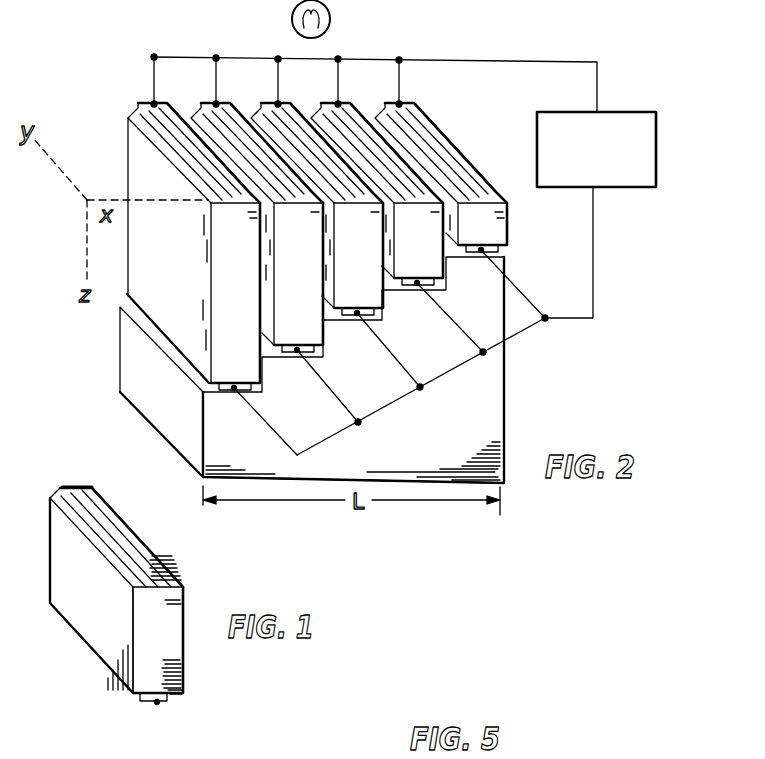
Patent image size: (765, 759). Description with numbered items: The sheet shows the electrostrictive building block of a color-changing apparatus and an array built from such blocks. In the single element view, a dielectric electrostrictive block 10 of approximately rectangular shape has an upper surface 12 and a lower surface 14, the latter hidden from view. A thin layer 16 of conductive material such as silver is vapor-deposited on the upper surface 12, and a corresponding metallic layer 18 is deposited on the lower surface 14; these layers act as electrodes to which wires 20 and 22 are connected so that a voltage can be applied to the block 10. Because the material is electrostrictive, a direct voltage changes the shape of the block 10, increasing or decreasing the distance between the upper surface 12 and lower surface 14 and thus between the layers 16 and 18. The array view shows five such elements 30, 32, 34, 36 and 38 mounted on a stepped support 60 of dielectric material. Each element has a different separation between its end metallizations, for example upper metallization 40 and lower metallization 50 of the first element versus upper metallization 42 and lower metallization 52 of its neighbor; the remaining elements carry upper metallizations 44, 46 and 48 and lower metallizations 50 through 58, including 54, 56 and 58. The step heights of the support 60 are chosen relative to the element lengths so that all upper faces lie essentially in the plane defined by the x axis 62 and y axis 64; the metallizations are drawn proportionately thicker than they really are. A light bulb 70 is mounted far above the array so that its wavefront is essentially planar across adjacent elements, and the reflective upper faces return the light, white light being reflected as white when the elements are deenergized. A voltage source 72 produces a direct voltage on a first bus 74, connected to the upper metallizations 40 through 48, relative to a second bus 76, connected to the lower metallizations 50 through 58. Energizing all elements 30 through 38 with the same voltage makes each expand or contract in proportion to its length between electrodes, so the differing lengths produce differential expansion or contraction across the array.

In FIG. 1, the electrostrictive block 10 is at (175, 611).
In FIG. 1, the upper surface 12 is at (110, 553).
In FIG. 1, the lower surface 14 is at (178, 694).
In FIG. 1, the thin layer of conductive material 16 is at (98, 506).
In FIG. 1, the metallic layer 18 is at (137, 697).
In FIG. 1, the wire 20 is at (100, 485).
In FIG. 1, the wire 22 is at (163, 704).
In FIG. 2, the electrostrictive element 30 is at (133, 140).
In FIG. 2, the electrostrictive element 32 is at (315, 330).
In FIG. 2, the electrostrictive element 34 is at (378, 294).
In FIG. 2, the electrostrictive element 36 is at (450, 293).
In FIG. 2, the electrostrictive element 38 is at (501, 228).
In FIG. 2, the upper metallization 40 is at (173, 127).
In FIG. 2, the upper metallization 42 is at (233, 128).
In FIG. 2, the upper metallization 44 is at (293, 128).
In FIG. 2, the upper metallization 46 is at (355, 128).
In FIG. 2, the upper metallization 48 is at (432, 143).
In FIG. 2, the lower metallization 50 is at (219, 393).
In FIG. 2, the lower metallization 52 is at (286, 355).
In FIG. 2, the lower metallization 54 is at (347, 320).
In FIG. 2, the lower metallization 56 is at (413, 287).
In FIG. 2, the lower metallization 58 is at (472, 250).
In FIG. 2, the stepped support 60 is at (128, 372).
In FIG. 2, the x axis 62 is at (106, 198).
In FIG. 2, the y axis 64 is at (62, 172).
In FIG. 2, the light bulb 70 is at (331, 19).
In FIG. 2, the voltage source 72 is at (625, 188).
In FIG. 2, the first bus 74 is at (495, 60).
In FIG. 2, the second bus 76 is at (573, 319).